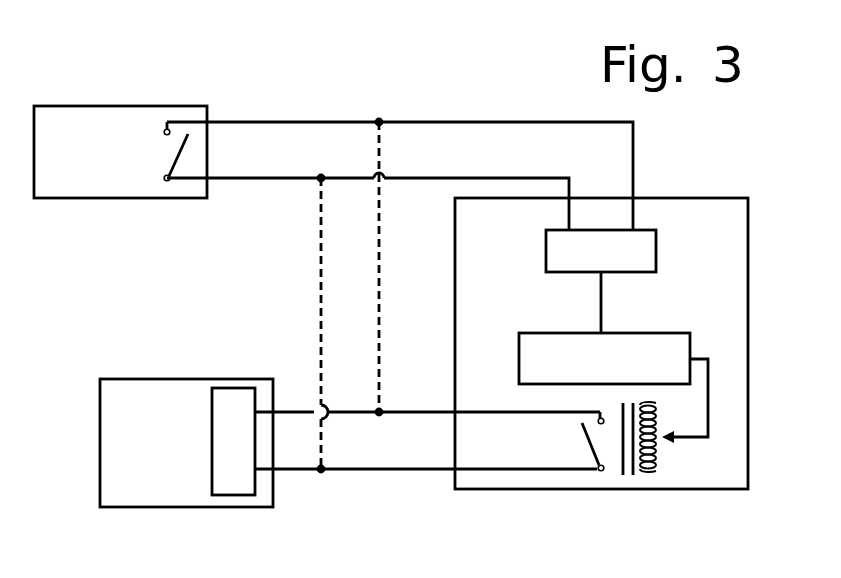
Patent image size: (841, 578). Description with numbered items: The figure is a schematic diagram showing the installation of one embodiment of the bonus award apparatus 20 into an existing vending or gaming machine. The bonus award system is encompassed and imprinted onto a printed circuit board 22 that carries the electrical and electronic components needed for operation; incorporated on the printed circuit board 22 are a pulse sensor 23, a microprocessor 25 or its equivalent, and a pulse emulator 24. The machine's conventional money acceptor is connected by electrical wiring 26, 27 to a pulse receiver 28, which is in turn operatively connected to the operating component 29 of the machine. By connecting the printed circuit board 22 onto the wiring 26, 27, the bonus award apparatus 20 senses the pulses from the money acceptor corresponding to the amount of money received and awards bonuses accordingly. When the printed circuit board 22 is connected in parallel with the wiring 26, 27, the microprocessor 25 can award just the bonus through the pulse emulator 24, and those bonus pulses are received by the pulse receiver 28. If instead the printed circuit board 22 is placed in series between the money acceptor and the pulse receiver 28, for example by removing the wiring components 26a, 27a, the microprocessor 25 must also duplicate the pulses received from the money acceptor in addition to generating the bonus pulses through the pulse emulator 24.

The bonus award apparatus 20 is at (503, 78).
The printed circuit board 22 is at (679, 198).
The pulse sensor 23 is at (656, 243).
The pulse emulator 24 is at (650, 470).
The microprocessor 25 is at (683, 333).
The electrical wiring 26 is at (240, 180).
The wiring component 26a is at (320, 262).
The electrical wiring 27 is at (293, 120).
The wiring component 27a is at (379, 297).
The pulse receiver 28 is at (212, 420).
The operating component 29 is at (113, 379).